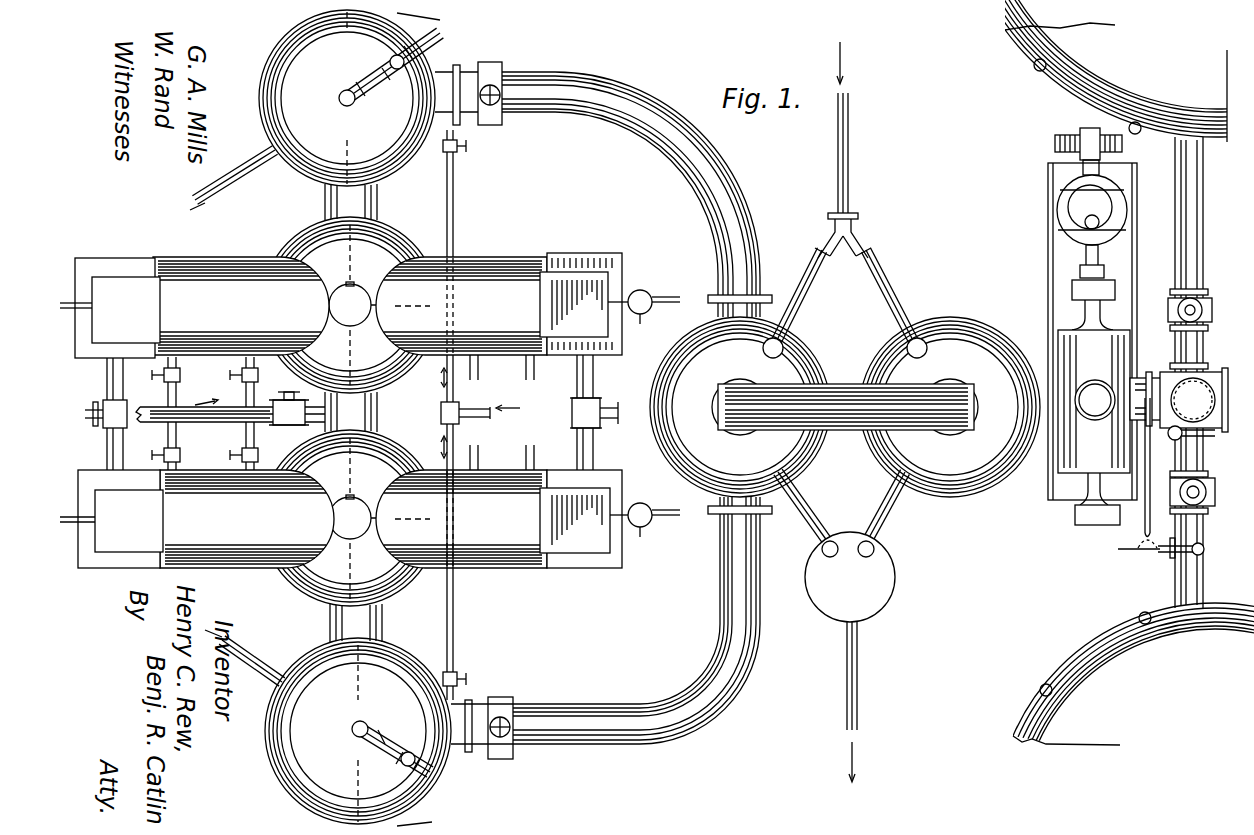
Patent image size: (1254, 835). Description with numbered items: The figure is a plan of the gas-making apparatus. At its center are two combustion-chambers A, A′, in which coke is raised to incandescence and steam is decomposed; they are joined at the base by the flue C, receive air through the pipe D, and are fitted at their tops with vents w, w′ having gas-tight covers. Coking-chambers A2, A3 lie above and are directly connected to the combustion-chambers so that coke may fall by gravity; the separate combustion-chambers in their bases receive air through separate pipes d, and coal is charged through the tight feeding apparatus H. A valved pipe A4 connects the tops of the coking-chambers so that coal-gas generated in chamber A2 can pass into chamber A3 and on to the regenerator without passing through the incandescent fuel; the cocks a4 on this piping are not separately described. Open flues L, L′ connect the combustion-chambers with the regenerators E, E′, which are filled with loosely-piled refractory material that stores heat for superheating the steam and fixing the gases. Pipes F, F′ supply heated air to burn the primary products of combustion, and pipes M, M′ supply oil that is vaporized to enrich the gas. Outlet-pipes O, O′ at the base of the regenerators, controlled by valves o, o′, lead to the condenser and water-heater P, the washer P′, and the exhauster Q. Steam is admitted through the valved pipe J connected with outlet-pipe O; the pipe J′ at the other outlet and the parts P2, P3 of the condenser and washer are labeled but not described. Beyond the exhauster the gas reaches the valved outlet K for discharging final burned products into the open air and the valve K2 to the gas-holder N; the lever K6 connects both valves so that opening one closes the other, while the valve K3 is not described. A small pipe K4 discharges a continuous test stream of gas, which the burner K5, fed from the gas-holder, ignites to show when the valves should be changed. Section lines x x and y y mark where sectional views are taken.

The regenerator E′ is at (347, 98).
The oil pipe M′ is at (364, 86).
The section line y y is at (426, 415).
The heated-air pipe F′ is at (231, 182).
The open flue L′ is at (370, 200).
The outlet-pipe O′ is at (658, 128).
The valve o′ is at (490, 126).
The upper steam pipe J′ is at (455, 226).
The combustion-chamber A′ is at (350, 305).
The vent w′ is at (360, 313).
The combustion-chamber A is at (350, 518).
The vent w is at (360, 527).
The flue C is at (380, 413).
The open flue L is at (375, 620).
The coking-chamber A3 is at (350, 306).
The coking-chamber A2 is at (353, 519).
The tight feeding apparatus H is at (370, 410).
The valved pipe A4 is at (112, 435).
The branch cocks a4 is at (574, 408).
The section line x x is at (105, 428).
The air pipe D is at (230, 416).
The air-supply pipe d is at (177, 385).
The steam pipe J is at (482, 428).
The regenerator E is at (320, 690).
The oil pipe M is at (372, 735).
The heated-air pipe F is at (262, 668).
The valve o is at (500, 706).
The outlet-pipe O is at (690, 686).
The condenser and water-heater P is at (740, 407).
The washer P′ is at (876, 407).
The water supply pipe P2 is at (849, 196).
The water outlet chamber P3 is at (842, 625).
The exhauster Q is at (1080, 448).
The valved outlet K is at (1188, 413).
The gas-holder valve K2 is at (1210, 494).
The upper gas valve K3 is at (1170, 312).
The test pipe K4 is at (1150, 445).
The burner K5 is at (1178, 556).
The lever K6 is at (1205, 358).
The gas-holder N is at (1104, 417).